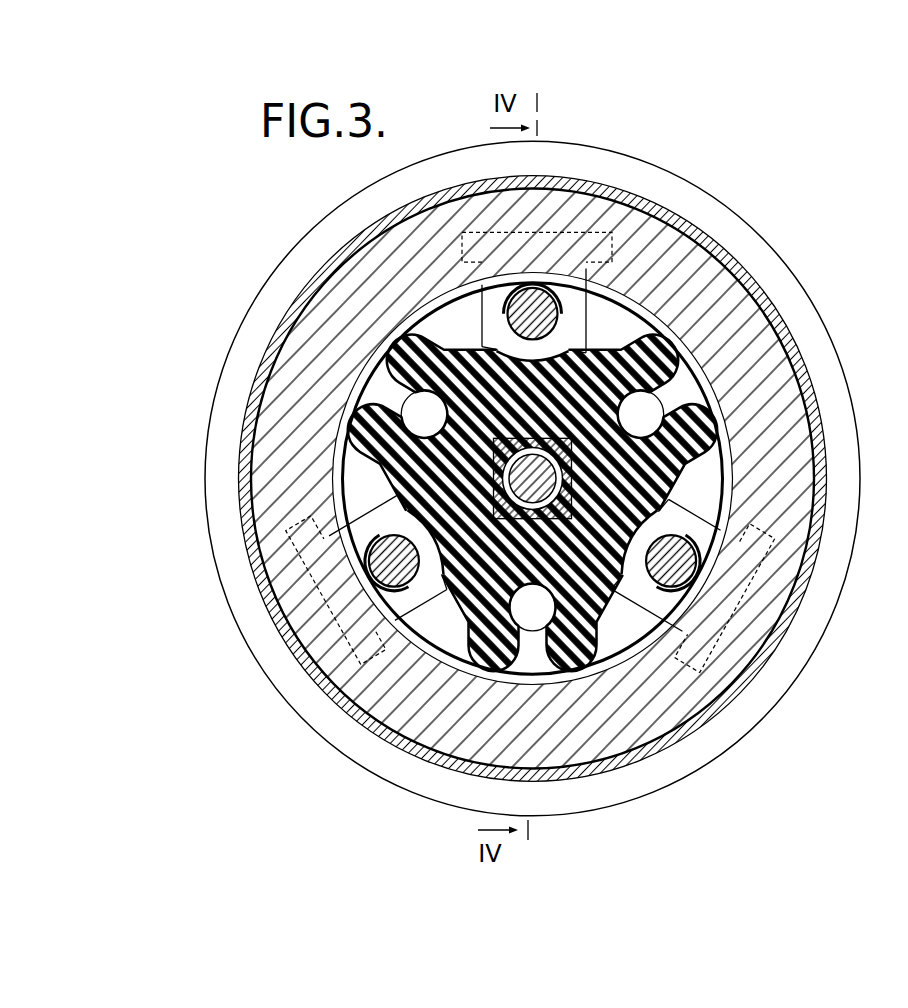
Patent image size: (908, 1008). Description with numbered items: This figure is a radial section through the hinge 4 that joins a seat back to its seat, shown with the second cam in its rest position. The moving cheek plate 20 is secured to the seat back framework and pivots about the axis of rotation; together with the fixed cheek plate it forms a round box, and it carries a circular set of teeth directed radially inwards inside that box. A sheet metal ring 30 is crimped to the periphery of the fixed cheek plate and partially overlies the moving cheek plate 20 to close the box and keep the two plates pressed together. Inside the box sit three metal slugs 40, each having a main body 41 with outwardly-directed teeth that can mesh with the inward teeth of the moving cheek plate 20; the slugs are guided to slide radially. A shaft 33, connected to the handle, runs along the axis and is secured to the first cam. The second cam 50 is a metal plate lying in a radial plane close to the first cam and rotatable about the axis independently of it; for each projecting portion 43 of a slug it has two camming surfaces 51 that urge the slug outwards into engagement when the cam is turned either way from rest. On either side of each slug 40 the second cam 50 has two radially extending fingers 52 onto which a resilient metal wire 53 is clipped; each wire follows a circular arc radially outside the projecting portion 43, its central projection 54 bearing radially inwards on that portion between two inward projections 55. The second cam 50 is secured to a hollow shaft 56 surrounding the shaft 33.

The hinge 4 is at (693, 168).
The moving cheek plate 20 is at (705, 700).
The sheet metal ring 30 is at (745, 245).
The shaft 33 is at (534, 507).
The metal slug 40 is at (612, 302).
The main body 41 is at (602, 328).
The projecting portion 43 is at (652, 300).
The second cam 50 is at (397, 358).
The camming surface 51 is at (452, 306).
The finger 52 is at (662, 355).
The resilient metal wire 53 is at (595, 319).
The projection 54 is at (540, 300).
The projection 55 is at (500, 295).
The shaft 56 is at (556, 520).